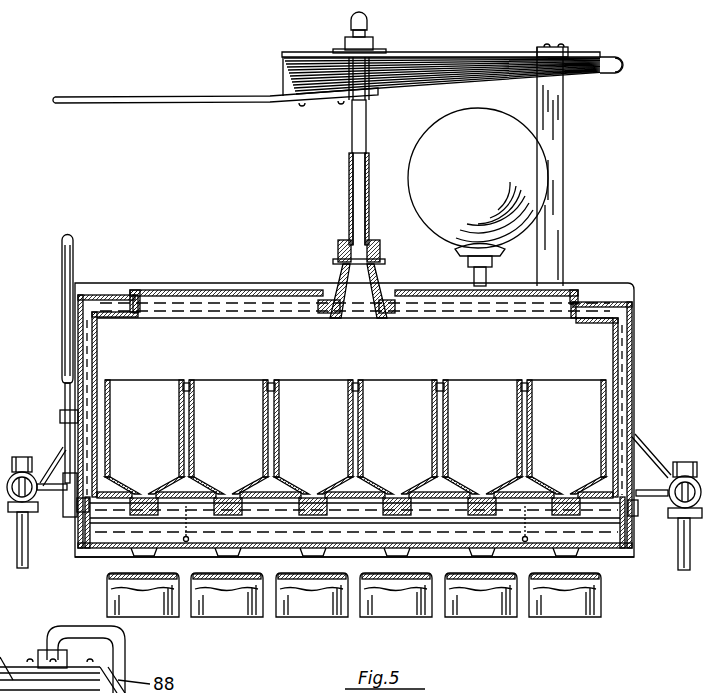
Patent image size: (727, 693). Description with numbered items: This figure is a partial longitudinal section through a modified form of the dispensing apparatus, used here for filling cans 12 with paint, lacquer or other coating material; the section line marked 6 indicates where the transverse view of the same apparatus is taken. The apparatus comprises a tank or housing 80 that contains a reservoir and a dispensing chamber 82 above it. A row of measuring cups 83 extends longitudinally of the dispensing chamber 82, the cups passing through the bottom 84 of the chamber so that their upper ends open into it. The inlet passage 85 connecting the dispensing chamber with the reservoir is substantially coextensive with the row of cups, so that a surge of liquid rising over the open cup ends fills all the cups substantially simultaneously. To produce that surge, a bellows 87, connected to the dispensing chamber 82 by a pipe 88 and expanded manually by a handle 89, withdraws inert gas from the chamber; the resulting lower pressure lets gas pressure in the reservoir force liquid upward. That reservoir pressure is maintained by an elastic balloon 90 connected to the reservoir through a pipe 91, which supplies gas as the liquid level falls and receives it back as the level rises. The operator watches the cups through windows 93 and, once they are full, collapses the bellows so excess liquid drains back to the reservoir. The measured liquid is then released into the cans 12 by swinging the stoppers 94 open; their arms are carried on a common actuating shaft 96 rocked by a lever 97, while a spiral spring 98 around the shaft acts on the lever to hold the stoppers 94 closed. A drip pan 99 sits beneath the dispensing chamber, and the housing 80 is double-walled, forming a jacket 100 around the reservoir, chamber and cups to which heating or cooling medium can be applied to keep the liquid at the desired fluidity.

The section line 6- 6 is at (590, 300).
The cans 12 is at (588, 612).
The tank or housing 80 is at (634, 352).
The dispensing chamber 82 is at (268, 326).
The measuring cups 83 is at (233, 392).
The bottom 84 is at (359, 384).
The inlet passage 85 is at (623, 540).
The bellows 87 is at (410, 68).
The pipe 88 is at (350, 127).
The handle 89 is at (88, 103).
The balloon 90 is at (455, 143).
The pipe 91 is at (472, 274).
The windows 93 is at (230, 293).
The stoppers 94 is at (227, 497).
The actuating shaft 96 is at (280, 507).
The lever 97 is at (66, 352).
The spiral spring 98 is at (70, 516).
The drip pan 99 is at (613, 556).
The jacket 100 is at (620, 412).